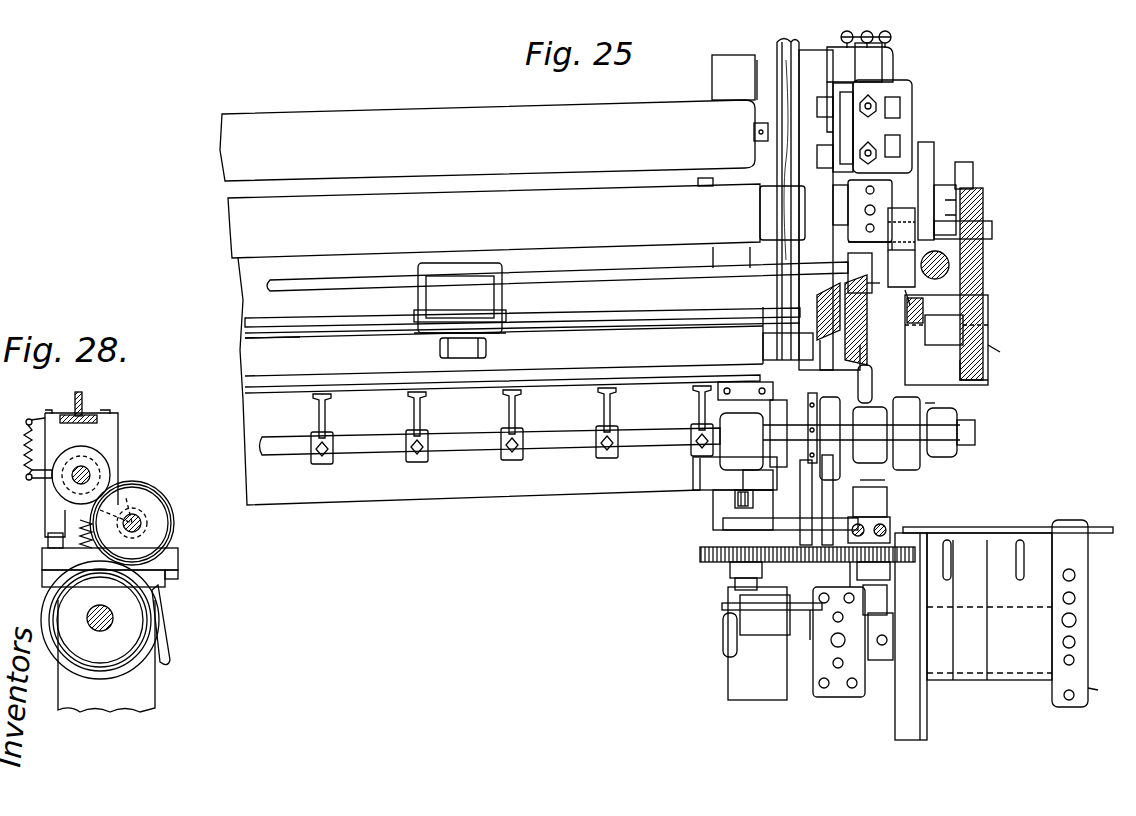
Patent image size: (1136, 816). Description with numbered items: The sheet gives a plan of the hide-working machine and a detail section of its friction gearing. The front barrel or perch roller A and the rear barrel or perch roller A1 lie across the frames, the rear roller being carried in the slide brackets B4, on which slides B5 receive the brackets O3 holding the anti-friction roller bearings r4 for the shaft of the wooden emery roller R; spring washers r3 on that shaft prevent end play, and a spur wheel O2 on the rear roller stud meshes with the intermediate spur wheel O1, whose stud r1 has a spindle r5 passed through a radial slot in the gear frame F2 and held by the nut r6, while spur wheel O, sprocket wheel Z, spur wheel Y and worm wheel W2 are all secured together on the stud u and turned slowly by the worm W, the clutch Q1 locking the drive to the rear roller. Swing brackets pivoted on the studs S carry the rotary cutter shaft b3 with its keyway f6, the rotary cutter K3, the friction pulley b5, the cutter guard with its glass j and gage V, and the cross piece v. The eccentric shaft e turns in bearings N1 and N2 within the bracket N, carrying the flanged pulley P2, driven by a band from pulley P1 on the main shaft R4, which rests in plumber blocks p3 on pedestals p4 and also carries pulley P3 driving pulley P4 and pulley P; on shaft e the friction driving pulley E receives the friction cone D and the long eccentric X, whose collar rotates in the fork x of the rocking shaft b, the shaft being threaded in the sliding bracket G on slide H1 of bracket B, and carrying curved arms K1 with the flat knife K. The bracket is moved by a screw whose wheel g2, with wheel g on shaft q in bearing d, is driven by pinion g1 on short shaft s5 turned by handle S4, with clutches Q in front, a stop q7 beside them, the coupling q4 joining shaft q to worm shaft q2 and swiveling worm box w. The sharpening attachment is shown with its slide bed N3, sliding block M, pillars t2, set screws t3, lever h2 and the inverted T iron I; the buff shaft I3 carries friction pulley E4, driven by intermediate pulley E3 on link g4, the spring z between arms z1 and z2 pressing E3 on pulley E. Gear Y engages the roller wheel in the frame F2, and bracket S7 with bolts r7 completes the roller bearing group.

In FIG. 25, the emery roller R is at (487, 140).
In FIG. 25, the rear barrel or perch roller A1 is at (516, 221).
In FIG. 25, the barrel or perch roller A is at (500, 381).
In FIG. 25, the studs S is at (775, 134).
In FIG. 25, the groove or keyway f6 is at (307, 338).
In FIG. 25, the rotary cutter shaft b3 is at (262, 343).
In FIG. 25, the curved sheet of glass j is at (460, 298).
In FIG. 25, the gage V is at (418, 304).
In FIG. 25, the bar v is at (485, 310).
In FIG. 25, the rotary cutter K3 is at (445, 358).
In FIG. 25, the flat knife K is at (502, 395).
In FIG. 25, the curved arms K1 is at (698, 455).
In FIG. 25, the rocking shaft b is at (490, 434).
In FIG. 25, the pulley P4 is at (772, 42).
In FIG. 25, the slides B5 is at (895, 75).
In FIG. 25, the brackets O3 is at (882, 126).
In FIG. 25, the spring washers r3 is at (900, 112).
In FIG. 25, the anti-friction roller bearings r4 is at (836, 93).
In FIG. 25, the bolt r7 is at (838, 136).
In FIG. 25, the block S7 is at (832, 222).
In FIG. 25, the nut r6 is at (880, 245).
In FIG. 25, the slide brackets B4 is at (900, 205).
In FIG. 25, the spindle r5 is at (928, 142).
In FIG. 25, the clutch Q1 is at (945, 185).
In FIG. 25, the spur wheel O2 is at (973, 176).
In FIG. 25, the worm W is at (983, 262).
In FIG. 25, the stud r1 is at (975, 228).
In FIG. 25, the intermediate spur wheel O1 is at (995, 238).
In FIG. 25, the gear frame F2 is at (922, 259).
In FIG. 25, the spur wheel Y is at (906, 288).
In FIG. 25, the swiveling worm box w is at (878, 284).
In FIG. 25, the stud u is at (946, 340).
In FIG. 25, the sprocket or chain wheel Z is at (1001, 352).
In FIG. 25, the spur wheel O is at (984, 374).
In FIG. 25, the friction pulley b5 is at (788, 346).
In FIG. 25, the fork x is at (775, 398).
In FIG. 25, the sliding bracket G is at (741, 441).
In FIG. 25, the long eccentric X is at (786, 433).
In FIG. 25, the friction cone D is at (811, 416).
In FIG. 25, the friction driving pulley E is at (830, 438).
In FIG. 28, the friction driving pulley E is at (100, 620).
In FIG. 25, the main bearing N1 is at (870, 435).
In FIG. 25, the flanged driving pulley P2 is at (906, 433).
In FIG. 25, the bearing N2 is at (957, 458).
In FIG. 25, the worm wheel W2 is at (938, 393).
In FIG. 25, the block B is at (735, 473).
In FIG. 25, the slide H1 is at (758, 478).
In FIG. 25, the spring q7 is at (735, 500).
In FIG. 25, the short shaft s5 is at (804, 500).
In FIG. 25, the universal or ball joint coupling q4 is at (853, 500).
In FIG. 25, the worm shaft q2 is at (880, 480).
In FIG. 25, the bearing d is at (890, 520).
In FIG. 25, the spur wheel g2 is at (702, 554).
In FIG. 25, the spur wheel g is at (905, 540).
In FIG. 25, the pinion g1 is at (733, 570).
In FIG. 25, the clutches Q is at (735, 595).
In FIG. 25, the handle or lever S4 is at (725, 615).
In FIG. 25, the driving pulley P3 is at (759, 643).
In FIG. 25, the main driving shaft R4 is at (827, 642).
In FIG. 25, the shaft q is at (880, 585).
In FIG. 25, the driving pulley P1 is at (911, 636).
In FIG. 25, the pulley P is at (989, 618).
In FIG. 25, the plumber block p3 is at (1082, 600).
In FIG. 25, the pedestal or stand p4 is at (1088, 690).
In FIG. 28, the inverted T iron I is at (82, 410).
In FIG. 28, the spring z is at (19, 450).
In FIG. 28, the arm z1 is at (24, 418).
In FIG. 28, the arm z2 is at (28, 475).
In FIG. 28, the friction pulley E4 is at (105, 470).
In FIG. 28, the buff shaft I3 is at (90, 470).
In FIG. 28, the intermediate friction pulley E3 is at (165, 525).
In FIG. 28, the link g4 is at (150, 510).
In FIG. 28, the sliding block M is at (170, 560).
In FIG. 28, the slide bed N3 is at (185, 580).
In FIG. 28, the pillars t2 is at (48, 540).
In FIG. 28, the set screws t3 is at (80, 548).
In FIG. 28, the eccentric shaft e is at (100, 631).
In FIG. 28, the main bearing bracket N is at (106, 669).
In FIG. 28, the small lever h2 is at (170, 650).